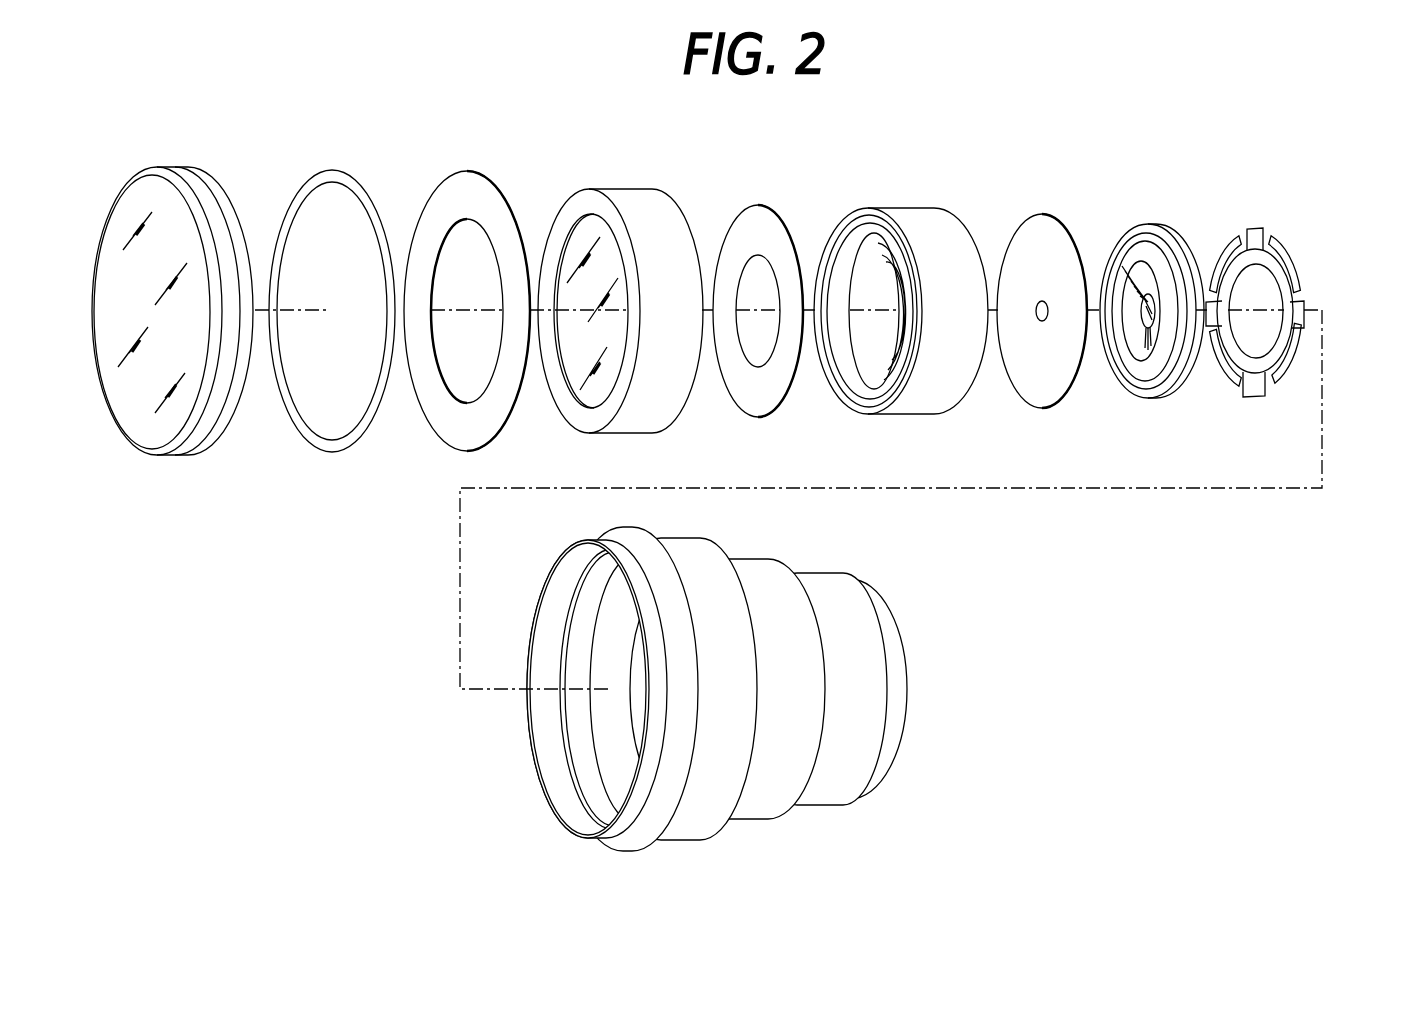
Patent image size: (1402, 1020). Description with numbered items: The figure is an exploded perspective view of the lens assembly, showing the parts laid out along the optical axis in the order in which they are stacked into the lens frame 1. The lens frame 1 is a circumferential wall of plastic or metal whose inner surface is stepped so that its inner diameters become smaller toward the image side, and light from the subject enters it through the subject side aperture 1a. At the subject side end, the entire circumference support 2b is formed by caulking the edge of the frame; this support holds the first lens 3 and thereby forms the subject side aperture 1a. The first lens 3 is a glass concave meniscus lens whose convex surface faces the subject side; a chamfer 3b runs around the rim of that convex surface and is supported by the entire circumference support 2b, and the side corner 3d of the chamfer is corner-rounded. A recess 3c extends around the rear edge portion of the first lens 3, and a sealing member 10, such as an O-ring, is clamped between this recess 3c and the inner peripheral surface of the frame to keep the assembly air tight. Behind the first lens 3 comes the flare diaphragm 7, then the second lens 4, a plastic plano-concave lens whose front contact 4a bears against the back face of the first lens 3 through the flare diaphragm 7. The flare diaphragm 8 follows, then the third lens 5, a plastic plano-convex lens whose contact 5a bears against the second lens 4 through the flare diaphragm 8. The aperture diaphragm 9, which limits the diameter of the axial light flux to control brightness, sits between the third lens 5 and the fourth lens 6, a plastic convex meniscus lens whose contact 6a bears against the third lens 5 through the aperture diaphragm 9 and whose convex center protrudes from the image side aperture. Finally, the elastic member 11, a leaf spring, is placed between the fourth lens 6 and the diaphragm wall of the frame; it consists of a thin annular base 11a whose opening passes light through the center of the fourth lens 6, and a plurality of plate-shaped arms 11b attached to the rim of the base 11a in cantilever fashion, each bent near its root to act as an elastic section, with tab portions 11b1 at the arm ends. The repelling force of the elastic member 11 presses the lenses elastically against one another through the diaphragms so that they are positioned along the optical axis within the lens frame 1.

The lens frame 1 is at (679, 714).
The subject side aperture 1a is at (572, 770).
The entire circumference support 2b is at (600, 834).
The first lens 3 is at (192, 318).
The chamfer 3b is at (166, 450).
The recess 3c is at (218, 426).
The side corner 3d is at (215, 214).
The sealing member 10 is at (326, 453).
The flare diaphragm 7 is at (473, 170).
The second lens 4 is at (607, 289).
The contact 4a is at (574, 412).
The flare diaphragm 8 is at (760, 205).
The third lens 5 is at (880, 290).
The contact 5a is at (848, 406).
The aperture diaphragm 9 is at (1042, 215).
The fourth lens 6 is at (1116, 285).
The contact 6a is at (1118, 393).
The elastic member 11 is at (1263, 303).
The annular base 11a is at (1239, 278).
The arm 11b is at (1221, 246).
The engaging tab of elastic arm 11b1 is at (1337, 387).